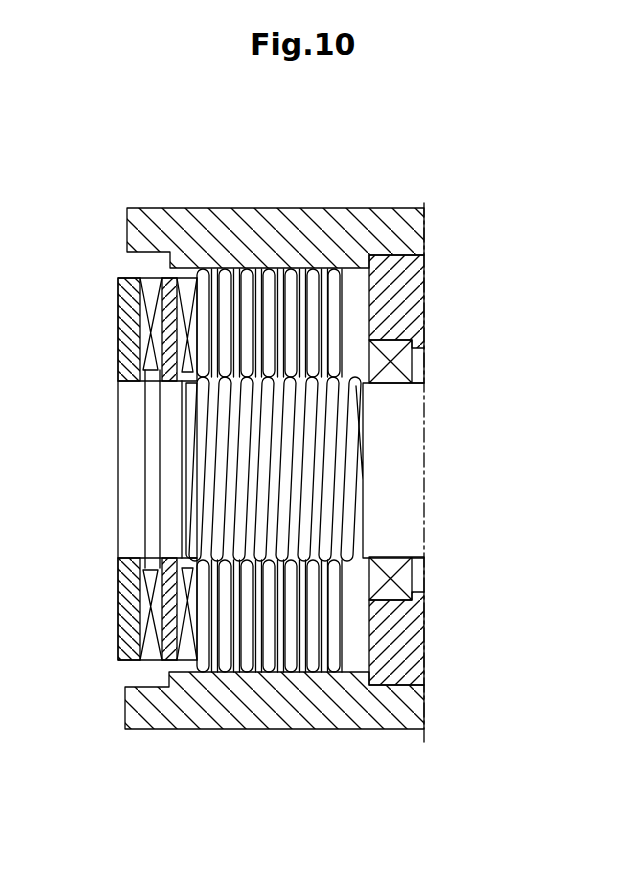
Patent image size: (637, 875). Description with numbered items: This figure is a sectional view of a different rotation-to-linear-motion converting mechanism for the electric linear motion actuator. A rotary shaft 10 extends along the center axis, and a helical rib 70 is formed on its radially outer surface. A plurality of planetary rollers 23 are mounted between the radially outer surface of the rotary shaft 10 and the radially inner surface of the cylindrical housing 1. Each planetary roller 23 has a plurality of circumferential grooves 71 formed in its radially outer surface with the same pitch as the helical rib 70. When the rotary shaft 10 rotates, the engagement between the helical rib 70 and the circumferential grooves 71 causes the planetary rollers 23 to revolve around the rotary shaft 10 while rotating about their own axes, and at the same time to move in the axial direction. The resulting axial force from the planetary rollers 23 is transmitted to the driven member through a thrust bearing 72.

The housing 1 is at (167, 218).
The rotary shaft 10 is at (415, 468).
The planetary rollers 23 is at (303, 270).
The helical rib 70 is at (212, 478).
The circumferential grooves 71 is at (262, 270).
The thrust bearing 72 is at (145, 325).